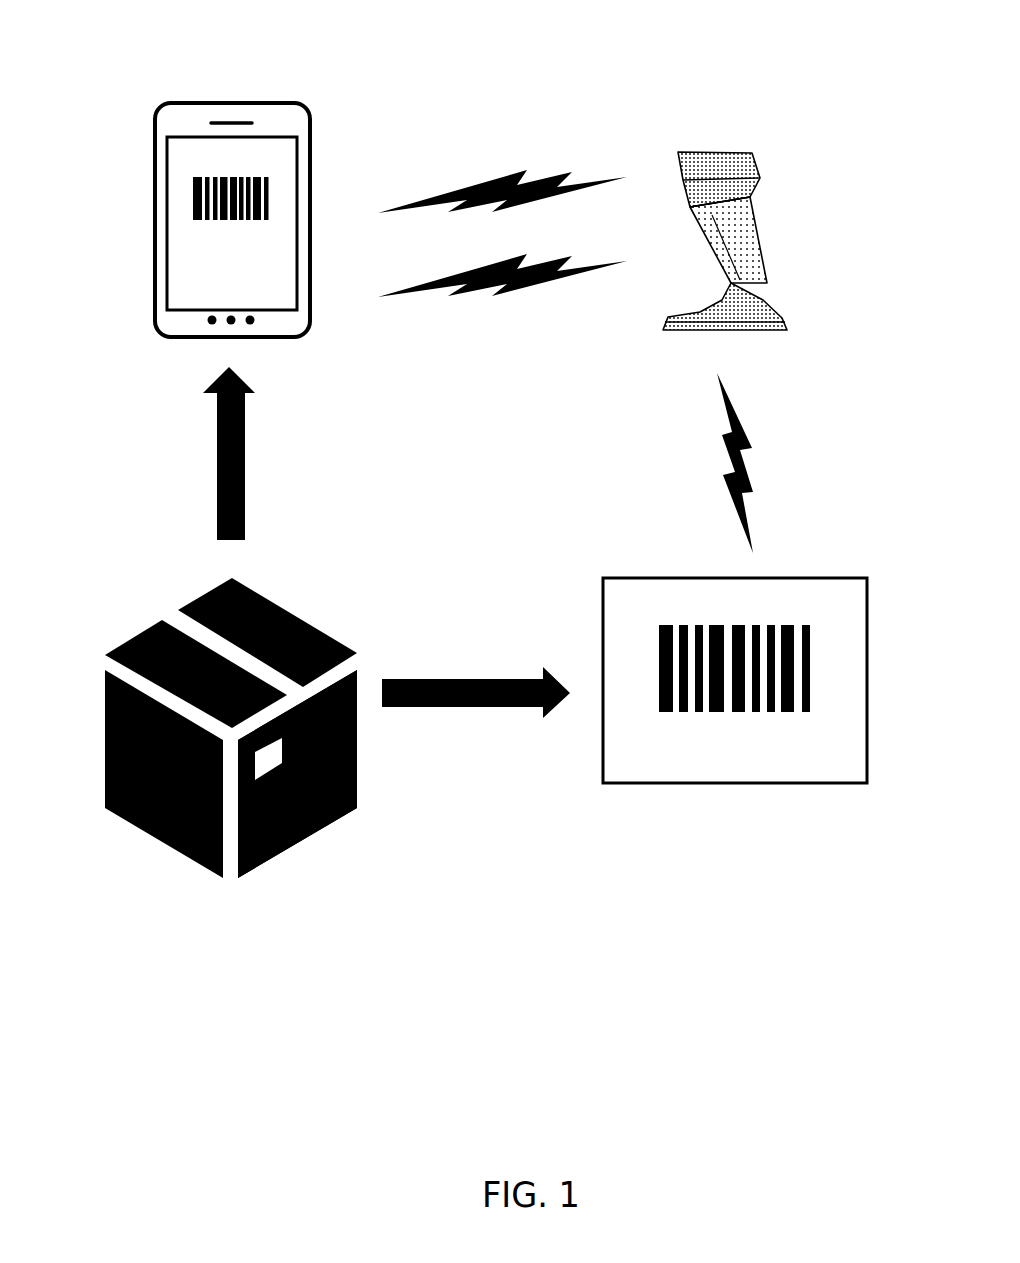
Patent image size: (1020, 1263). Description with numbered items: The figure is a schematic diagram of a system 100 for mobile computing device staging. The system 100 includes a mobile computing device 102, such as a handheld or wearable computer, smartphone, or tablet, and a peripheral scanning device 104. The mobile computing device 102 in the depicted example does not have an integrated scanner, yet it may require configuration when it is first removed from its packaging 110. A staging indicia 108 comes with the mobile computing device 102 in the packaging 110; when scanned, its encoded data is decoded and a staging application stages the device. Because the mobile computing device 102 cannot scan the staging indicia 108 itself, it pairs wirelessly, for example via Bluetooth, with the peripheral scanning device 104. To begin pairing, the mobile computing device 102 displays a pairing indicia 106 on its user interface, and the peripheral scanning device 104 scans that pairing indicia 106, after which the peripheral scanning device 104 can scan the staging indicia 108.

The system 100 is at (854, 36).
The mobile computing device 102 is at (157, 111).
The peripheral scanning device 104 is at (673, 138).
The pairing indicia 106 is at (176, 210).
The staging indicia 108 is at (602, 629).
The packaging 110 is at (146, 628).